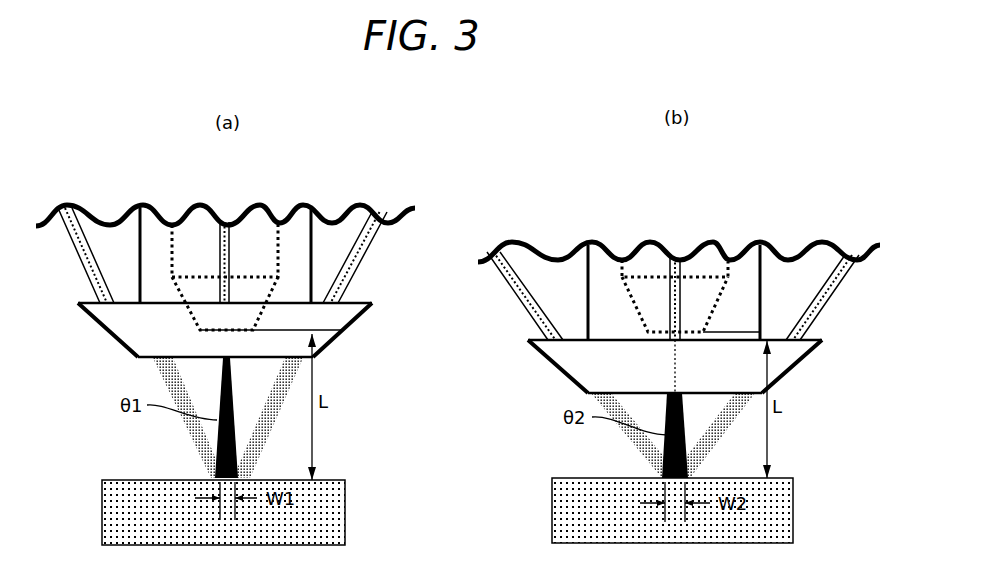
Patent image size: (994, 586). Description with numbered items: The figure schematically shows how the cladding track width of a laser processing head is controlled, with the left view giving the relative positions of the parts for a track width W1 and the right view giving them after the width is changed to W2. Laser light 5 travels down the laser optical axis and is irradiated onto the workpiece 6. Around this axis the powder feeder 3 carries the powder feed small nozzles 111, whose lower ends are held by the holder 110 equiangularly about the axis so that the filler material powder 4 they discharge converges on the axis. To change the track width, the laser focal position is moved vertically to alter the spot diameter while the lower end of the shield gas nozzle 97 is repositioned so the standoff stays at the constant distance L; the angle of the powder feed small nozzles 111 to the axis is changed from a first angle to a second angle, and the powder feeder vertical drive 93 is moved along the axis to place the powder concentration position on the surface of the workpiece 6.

The powder feeder 3 is at (360, 341).
The filler material powder 4 is at (268, 408).
The laser light 5 is at (213, 443).
The workpiece 6 is at (118, 513).
The powder feeder vertical drive 93 is at (155, 232).
The shield gas nozzle 97 is at (193, 294).
The holder 110 is at (102, 312).
The powder feed small nozzles 111 is at (92, 255).